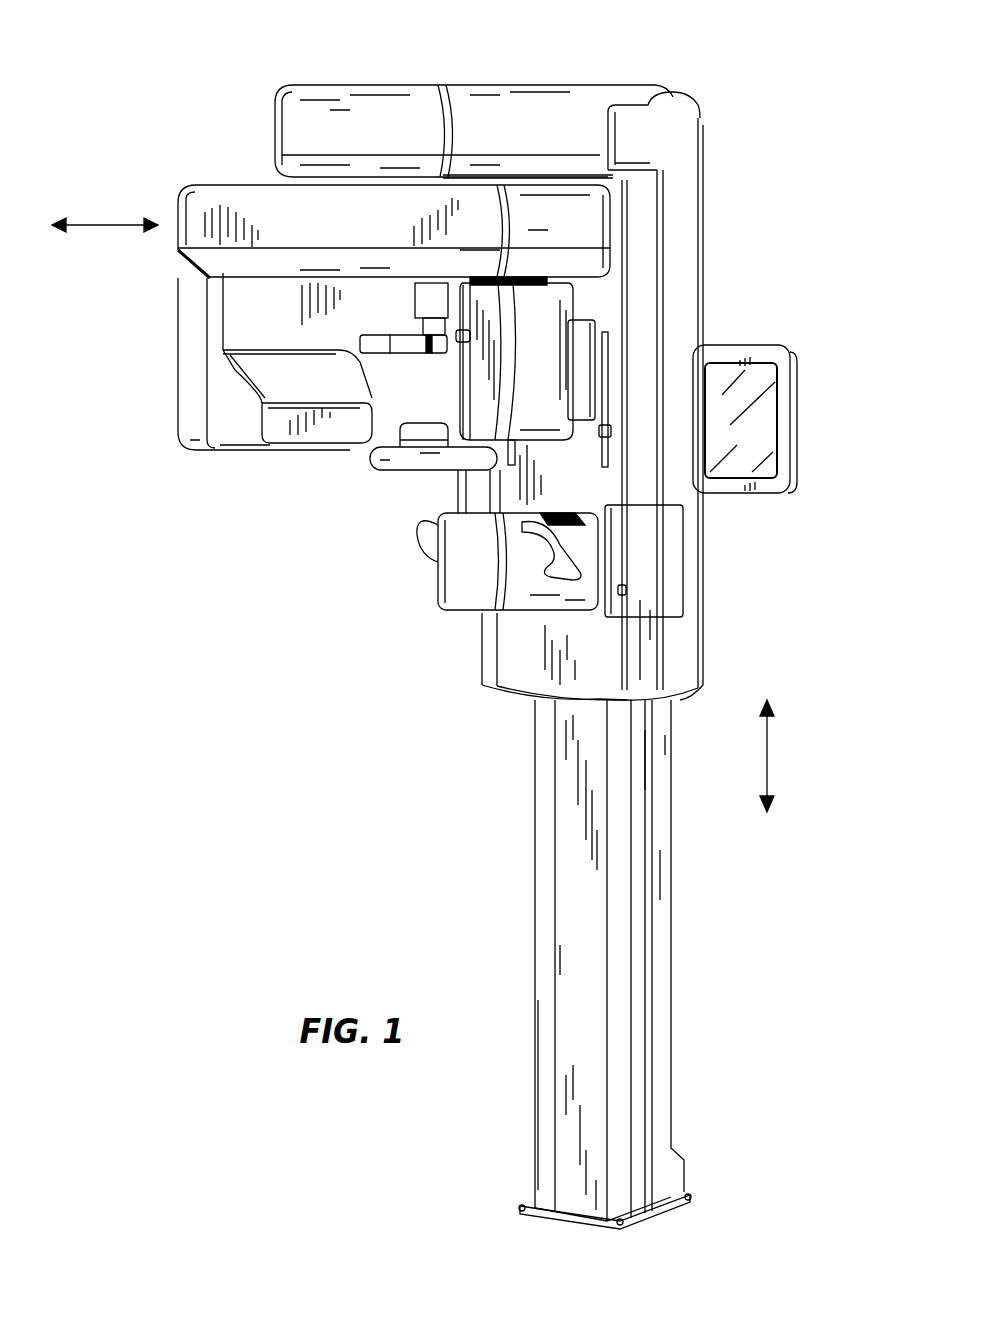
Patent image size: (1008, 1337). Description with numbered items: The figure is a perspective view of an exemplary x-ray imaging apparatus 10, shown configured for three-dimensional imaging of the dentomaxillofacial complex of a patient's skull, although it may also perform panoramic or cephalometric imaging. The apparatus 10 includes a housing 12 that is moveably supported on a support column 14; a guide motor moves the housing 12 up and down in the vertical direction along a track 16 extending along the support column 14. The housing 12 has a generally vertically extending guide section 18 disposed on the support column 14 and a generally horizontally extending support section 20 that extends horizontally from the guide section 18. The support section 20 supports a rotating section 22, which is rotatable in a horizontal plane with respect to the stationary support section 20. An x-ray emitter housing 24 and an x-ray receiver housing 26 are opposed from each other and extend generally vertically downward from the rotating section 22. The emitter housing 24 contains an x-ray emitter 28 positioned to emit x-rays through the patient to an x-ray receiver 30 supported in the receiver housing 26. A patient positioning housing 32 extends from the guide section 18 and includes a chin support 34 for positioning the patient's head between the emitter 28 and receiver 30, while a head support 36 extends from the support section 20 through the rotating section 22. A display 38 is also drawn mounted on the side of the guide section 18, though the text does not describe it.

The imaging apparatus 10 is at (800, 93).
The housing 12 is at (673, 157).
The support column 14 is at (672, 990).
The track 16 is at (648, 890).
The guide section 18 is at (680, 263).
The support section 20 is at (520, 122).
The rotating section 22 is at (273, 205).
The x-ray emitter housing 24 is at (198, 382).
The x-ray receiver housing 26 is at (543, 312).
The x-ray emitter 28 is at (273, 428).
The x-ray receiver 30 is at (490, 385).
The patient positioning housing 32 is at (587, 543).
The chin support 34 is at (413, 460).
The head support 36 is at (383, 335).
The display 38 is at (785, 440).